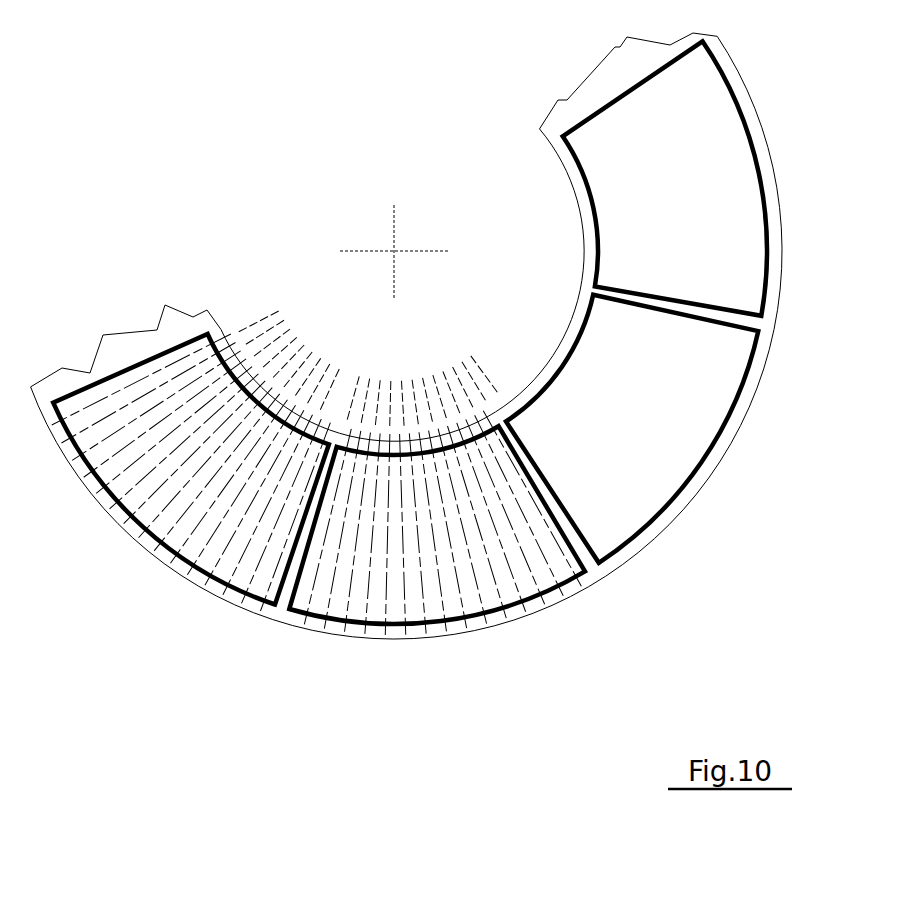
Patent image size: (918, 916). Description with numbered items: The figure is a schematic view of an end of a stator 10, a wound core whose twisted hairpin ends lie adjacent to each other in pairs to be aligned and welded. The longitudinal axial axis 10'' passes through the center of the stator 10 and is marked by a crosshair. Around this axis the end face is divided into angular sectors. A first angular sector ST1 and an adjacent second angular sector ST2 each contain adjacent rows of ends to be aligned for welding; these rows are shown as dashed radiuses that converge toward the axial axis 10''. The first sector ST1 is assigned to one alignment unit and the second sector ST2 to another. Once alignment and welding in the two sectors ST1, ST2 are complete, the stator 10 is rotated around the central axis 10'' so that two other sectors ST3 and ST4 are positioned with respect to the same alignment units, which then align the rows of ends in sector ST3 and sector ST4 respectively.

The stator 10 is at (406, 336).
The axial axis 10'' is at (376, 219).
The first angular sector ST1 is at (167, 547).
The second angular sector ST2 is at (430, 620).
The third angular sector ST3 is at (700, 472).
The fourth angular sector ST4 is at (626, 91).